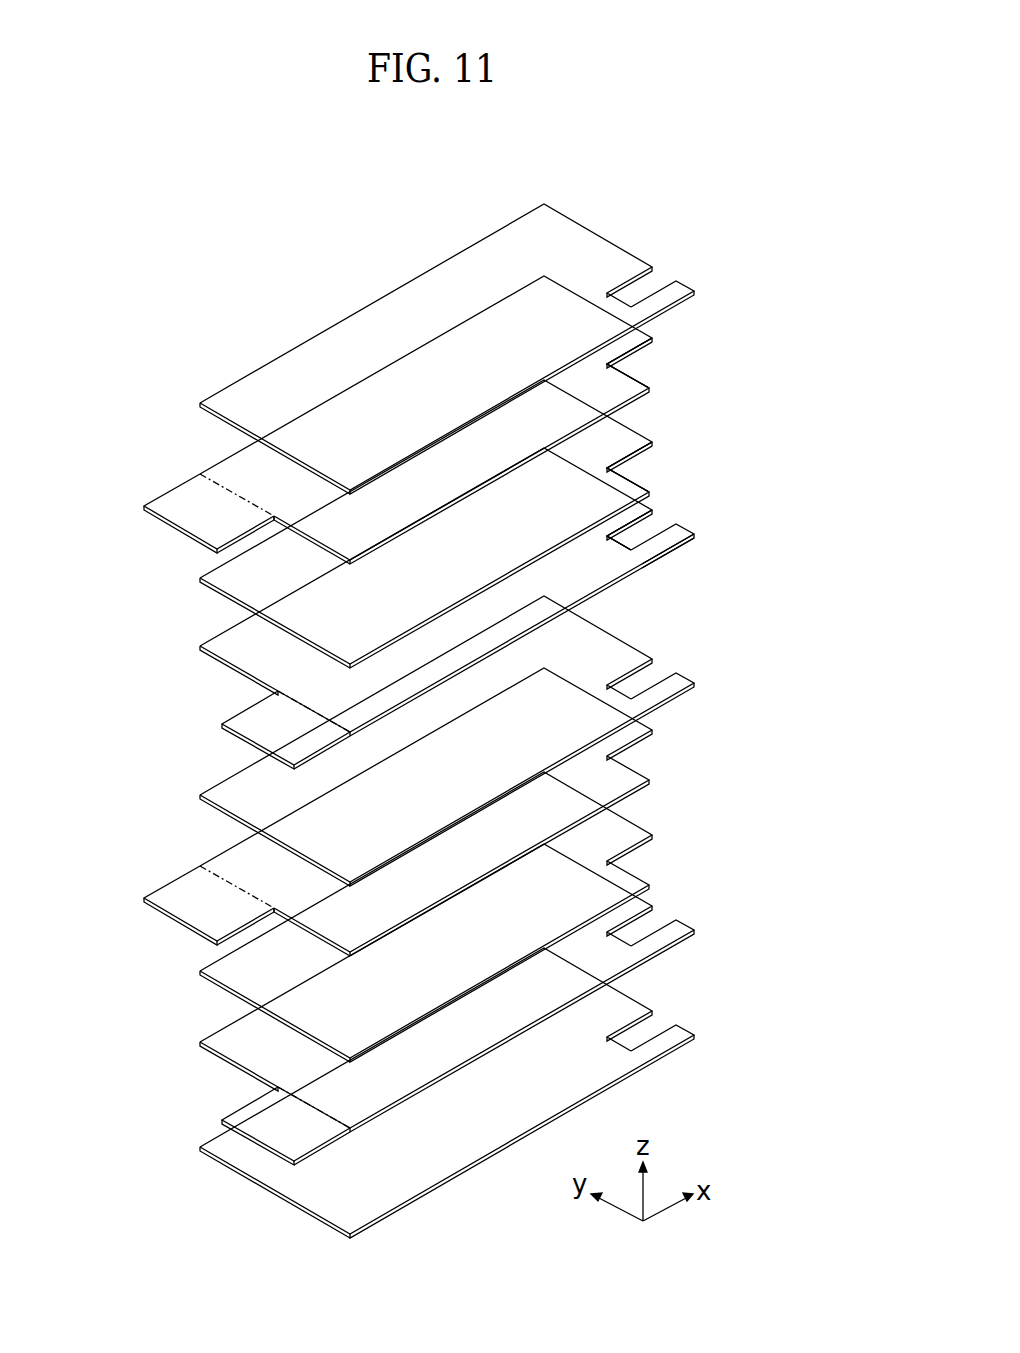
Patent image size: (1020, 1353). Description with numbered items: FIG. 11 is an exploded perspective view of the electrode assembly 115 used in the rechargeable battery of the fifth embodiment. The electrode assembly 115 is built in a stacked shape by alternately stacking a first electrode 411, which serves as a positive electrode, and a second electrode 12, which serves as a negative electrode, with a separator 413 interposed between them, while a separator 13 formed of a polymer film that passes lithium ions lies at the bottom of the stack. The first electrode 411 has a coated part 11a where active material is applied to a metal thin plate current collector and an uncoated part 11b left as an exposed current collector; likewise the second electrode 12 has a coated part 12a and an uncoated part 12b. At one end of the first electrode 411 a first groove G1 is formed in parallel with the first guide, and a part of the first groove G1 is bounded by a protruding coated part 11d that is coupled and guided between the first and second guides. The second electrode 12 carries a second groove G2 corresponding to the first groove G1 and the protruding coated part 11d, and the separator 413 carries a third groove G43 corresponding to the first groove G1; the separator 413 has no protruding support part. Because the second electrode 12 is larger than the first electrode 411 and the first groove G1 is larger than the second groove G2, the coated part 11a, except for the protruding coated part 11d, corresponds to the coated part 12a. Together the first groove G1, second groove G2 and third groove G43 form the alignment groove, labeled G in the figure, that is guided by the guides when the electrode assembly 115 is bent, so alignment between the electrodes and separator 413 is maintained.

The electrode assembly 115 is at (409, 184).
The second electrode 12 is at (160, 477).
The coated part 12a is at (225, 473).
The uncoated part 12b is at (187, 510).
The separator 413 is at (197, 588).
The first electrode 411 is at (201, 658).
The coated part 11a is at (298, 662).
The uncoated part 11b is at (255, 728).
The protruding coated part 11d is at (677, 530).
The separator 13 is at (251, 1189).
The first groove G1 is at (648, 537).
The second groove G2 is at (651, 361).
The third groove G43 is at (651, 465).
The gaps G is at (795, 772).